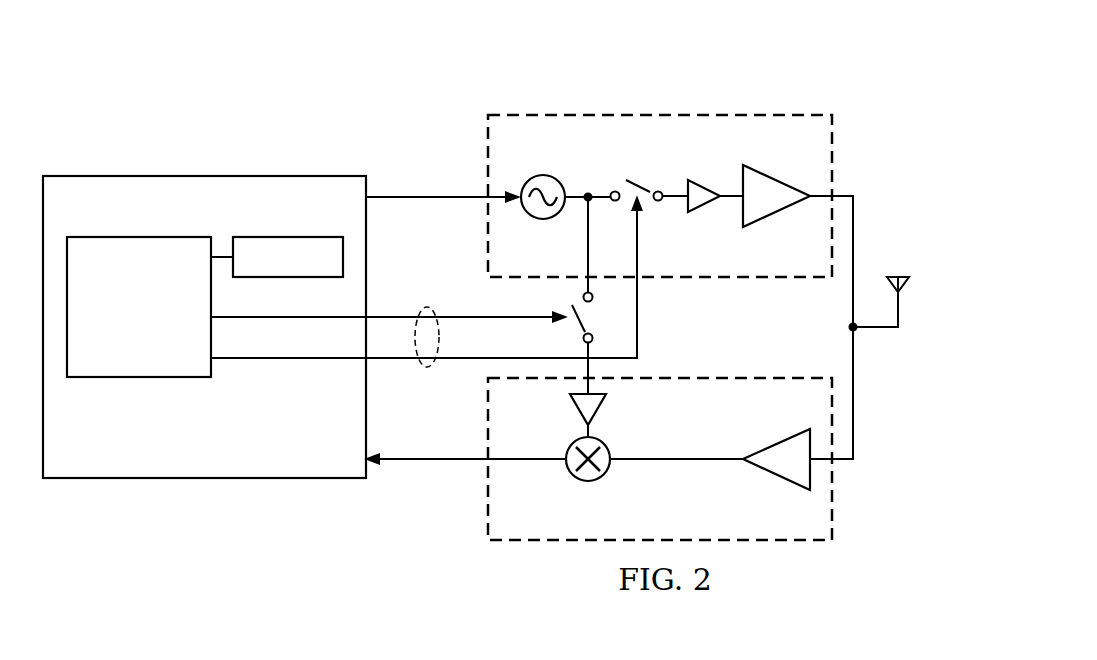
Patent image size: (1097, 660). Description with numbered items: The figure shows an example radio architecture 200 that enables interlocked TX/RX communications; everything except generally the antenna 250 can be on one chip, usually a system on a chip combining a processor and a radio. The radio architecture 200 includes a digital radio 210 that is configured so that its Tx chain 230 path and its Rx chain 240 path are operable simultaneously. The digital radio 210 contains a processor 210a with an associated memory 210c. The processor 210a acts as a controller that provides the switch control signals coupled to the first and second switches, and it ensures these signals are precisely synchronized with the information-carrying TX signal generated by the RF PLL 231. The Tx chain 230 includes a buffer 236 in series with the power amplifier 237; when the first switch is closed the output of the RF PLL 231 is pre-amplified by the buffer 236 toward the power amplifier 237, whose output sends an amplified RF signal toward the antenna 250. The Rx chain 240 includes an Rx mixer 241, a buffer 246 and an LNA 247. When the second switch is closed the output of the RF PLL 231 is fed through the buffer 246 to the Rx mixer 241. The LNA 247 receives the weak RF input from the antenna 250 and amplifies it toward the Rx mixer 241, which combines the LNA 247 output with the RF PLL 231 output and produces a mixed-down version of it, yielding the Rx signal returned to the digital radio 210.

The radio architecture 200 is at (248, 70).
The digital radio 210 is at (117, 165).
The processor 210a is at (138, 380).
The memory 210c is at (287, 236).
The Tx chain 230 is at (678, 104).
The RF PLL 231 is at (543, 220).
The buffer 236 is at (705, 208).
The power amplifier 237 is at (779, 208).
The Rx chain 240 is at (847, 485).
The Rx mixer 241 is at (578, 480).
The buffer 246 is at (576, 409).
The LNA 247 is at (768, 478).
The antenna 250 is at (900, 277).